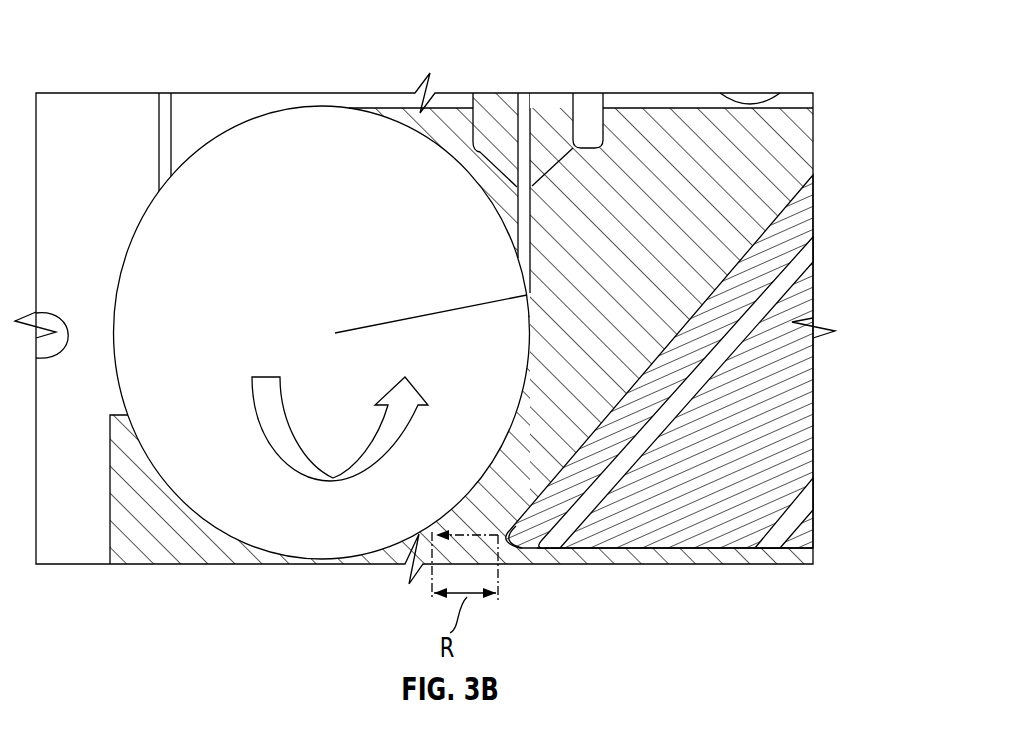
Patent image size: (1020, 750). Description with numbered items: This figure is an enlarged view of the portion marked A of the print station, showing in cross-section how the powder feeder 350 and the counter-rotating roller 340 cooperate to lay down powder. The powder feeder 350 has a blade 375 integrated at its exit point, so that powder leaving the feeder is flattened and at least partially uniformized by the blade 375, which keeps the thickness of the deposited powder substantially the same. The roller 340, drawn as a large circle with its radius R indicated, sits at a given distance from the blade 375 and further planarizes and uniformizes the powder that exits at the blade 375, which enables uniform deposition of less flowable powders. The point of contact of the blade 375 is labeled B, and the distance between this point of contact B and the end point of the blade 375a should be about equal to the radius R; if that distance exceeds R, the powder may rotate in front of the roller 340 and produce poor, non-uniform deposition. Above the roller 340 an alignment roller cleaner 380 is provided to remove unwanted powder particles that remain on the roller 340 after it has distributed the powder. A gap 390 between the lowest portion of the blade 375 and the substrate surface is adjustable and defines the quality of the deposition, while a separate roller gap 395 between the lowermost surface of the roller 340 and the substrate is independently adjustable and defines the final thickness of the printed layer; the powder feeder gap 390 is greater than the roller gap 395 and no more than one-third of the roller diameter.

The counter-rotating roller 340 is at (205, 275).
The powder feeder 350 is at (777, 427).
The blade 375 is at (712, 317).
The end point of the blade 375a is at (508, 547).
The alignment roller cleaner 380 is at (495, 112).
The gap 390 is at (827, 567).
The roller gap 395 is at (307, 563).
The portion A is at (125, 53).
The point of contact of the blade B is at (422, 533).